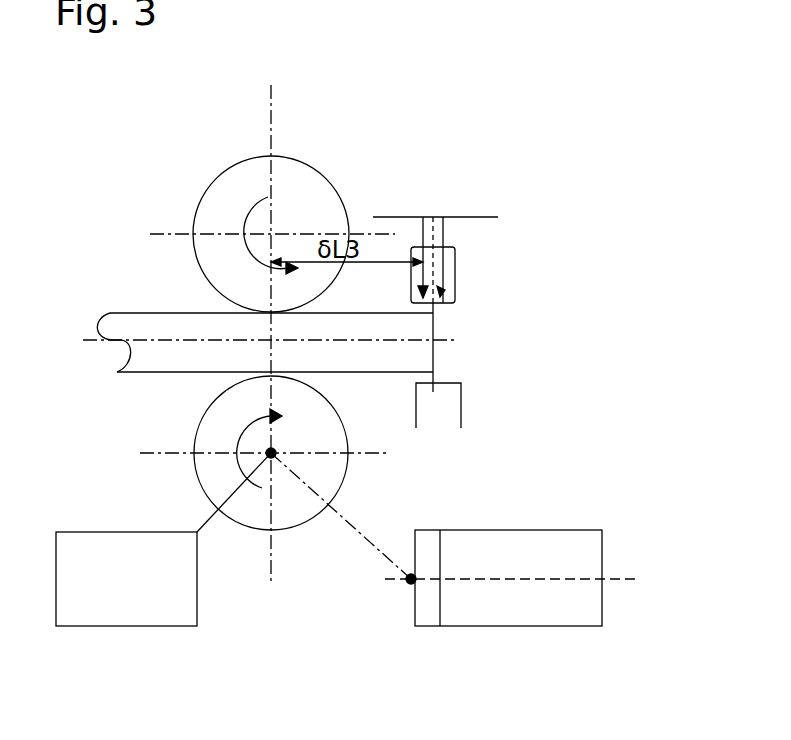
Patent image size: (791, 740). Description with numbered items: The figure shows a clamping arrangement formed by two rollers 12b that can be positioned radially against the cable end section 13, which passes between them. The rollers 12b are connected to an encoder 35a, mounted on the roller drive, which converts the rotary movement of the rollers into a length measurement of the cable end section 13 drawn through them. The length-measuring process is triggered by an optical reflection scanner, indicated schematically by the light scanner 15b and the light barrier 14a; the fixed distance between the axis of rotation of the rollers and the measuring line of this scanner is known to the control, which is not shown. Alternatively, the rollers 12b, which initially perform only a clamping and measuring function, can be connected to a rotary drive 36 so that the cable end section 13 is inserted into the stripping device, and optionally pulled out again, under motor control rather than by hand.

The roller 12b is at (240, 185).
The cable end section 13 is at (148, 330).
The light scanner 15b is at (443, 262).
The light barrier 14a is at (436, 413).
The drive for roller 36 is at (126, 579).
The encoder on roller (drive) 35a is at (565, 553).